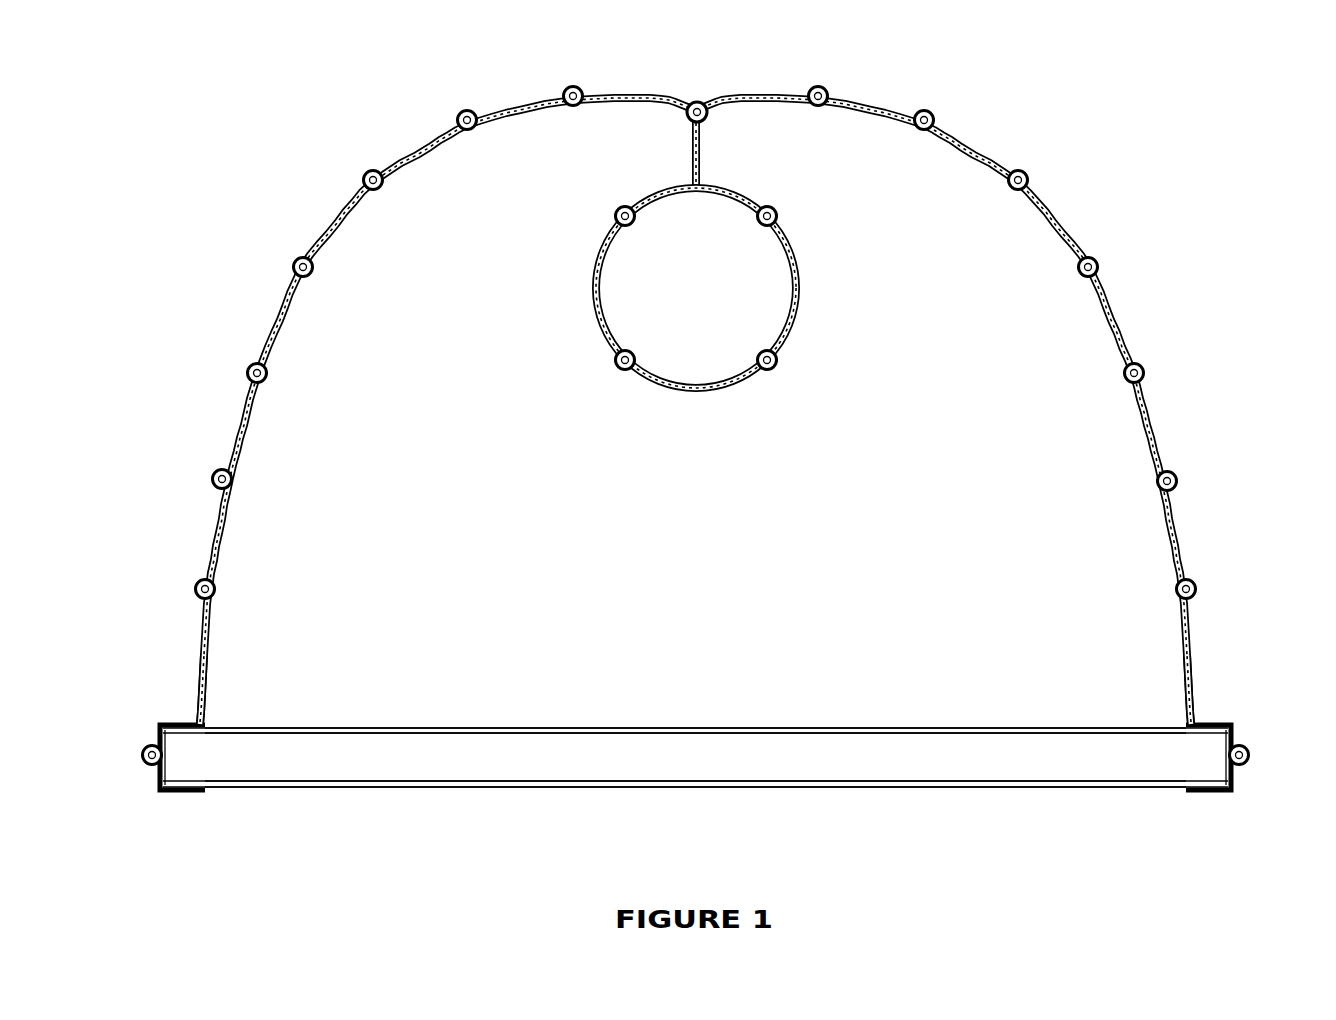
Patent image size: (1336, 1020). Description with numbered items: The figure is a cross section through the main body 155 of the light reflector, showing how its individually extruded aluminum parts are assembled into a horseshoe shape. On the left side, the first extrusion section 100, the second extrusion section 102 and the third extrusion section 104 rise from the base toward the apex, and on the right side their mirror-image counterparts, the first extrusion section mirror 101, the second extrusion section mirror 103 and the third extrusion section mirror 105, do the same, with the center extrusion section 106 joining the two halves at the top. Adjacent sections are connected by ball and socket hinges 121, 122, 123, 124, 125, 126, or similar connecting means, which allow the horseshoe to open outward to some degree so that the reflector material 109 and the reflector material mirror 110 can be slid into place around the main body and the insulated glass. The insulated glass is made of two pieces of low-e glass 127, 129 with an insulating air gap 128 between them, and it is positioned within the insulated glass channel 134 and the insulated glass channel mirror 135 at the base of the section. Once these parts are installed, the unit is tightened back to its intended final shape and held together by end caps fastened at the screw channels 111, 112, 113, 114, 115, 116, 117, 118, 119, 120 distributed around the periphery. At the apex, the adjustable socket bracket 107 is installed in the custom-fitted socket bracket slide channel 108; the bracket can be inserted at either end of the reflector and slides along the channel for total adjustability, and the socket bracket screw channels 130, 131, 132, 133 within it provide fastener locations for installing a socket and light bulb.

The extrusion section 1 100 is at (200, 662).
The extrusion section 1 mirror 101 is at (1192, 662).
The extrusion section 2 102 is at (288, 309).
The extrusion section 2 mirror 103 is at (1160, 432).
The extrusion section 3 104 is at (412, 153).
The extrusion section 3 mirror 105 is at (985, 160).
The center extrusion section 106 is at (650, 97).
The adjustable socket bracket 107 is at (595, 281).
The socket bracket slide channel 108 is at (700, 104).
The reflector material 109 is at (208, 693).
The reflector material mirror 110 is at (1187, 696).
The screw channel 111 is at (146, 752).
The screw channel 112 is at (1246, 752).
The screw channel 113 is at (212, 591).
The screw channel 114 is at (1180, 592).
The screw channel 115 is at (264, 375).
The screw channel 116 is at (1128, 377).
The screw channel 117 is at (378, 187).
The screw channel 118 is at (1013, 188).
The screw channel 119 is at (575, 104).
The screw channel 120 is at (816, 104).
The ball and socket hinge 121 is at (229, 481).
The ball and socket hinge 122 is at (1161, 484).
The ball and socket hinge 123 is at (308, 272).
The ball and socket hinge 124 is at (1084, 274).
The ball and socket hinge 125 is at (469, 128).
The ball and socket hinge 126 is at (921, 128).
The glass 127 is at (782, 727).
The insulating air gap 128 is at (685, 770).
The glass 129 is at (808, 788).
The socket bracket screw channel 130 is at (630, 221).
The socket bracket screw channel 131 is at (762, 221).
The socket bracket screw channel 132 is at (631, 356).
The socket bracket screw channel 133 is at (762, 356).
The insulated glass channel 134 is at (194, 728).
The insulated glass channel mirror 135 is at (1200, 728).
The main body 155 is at (972, 82).